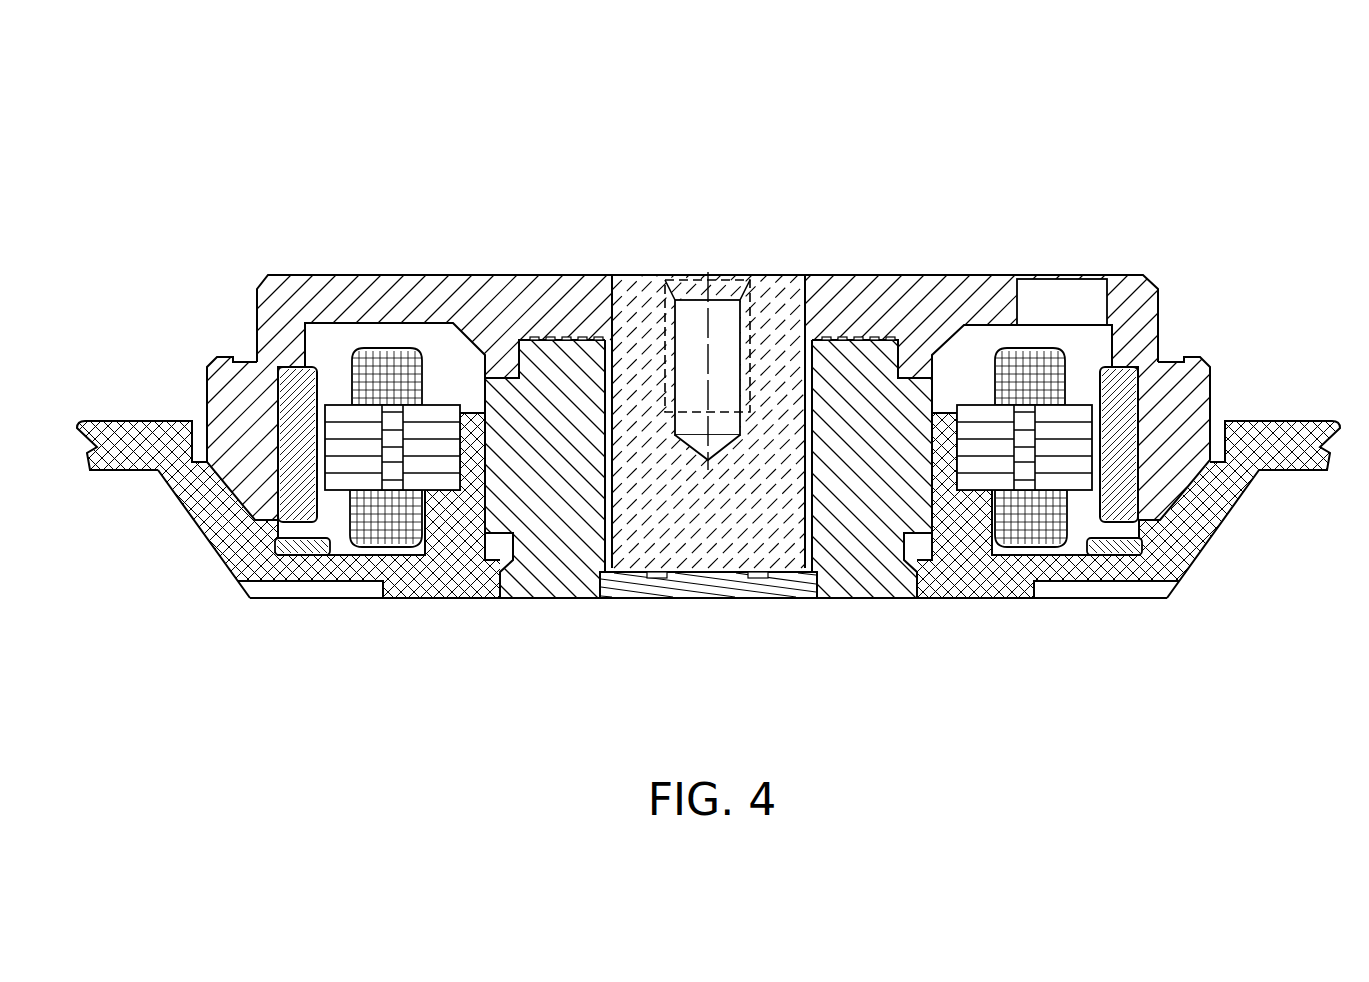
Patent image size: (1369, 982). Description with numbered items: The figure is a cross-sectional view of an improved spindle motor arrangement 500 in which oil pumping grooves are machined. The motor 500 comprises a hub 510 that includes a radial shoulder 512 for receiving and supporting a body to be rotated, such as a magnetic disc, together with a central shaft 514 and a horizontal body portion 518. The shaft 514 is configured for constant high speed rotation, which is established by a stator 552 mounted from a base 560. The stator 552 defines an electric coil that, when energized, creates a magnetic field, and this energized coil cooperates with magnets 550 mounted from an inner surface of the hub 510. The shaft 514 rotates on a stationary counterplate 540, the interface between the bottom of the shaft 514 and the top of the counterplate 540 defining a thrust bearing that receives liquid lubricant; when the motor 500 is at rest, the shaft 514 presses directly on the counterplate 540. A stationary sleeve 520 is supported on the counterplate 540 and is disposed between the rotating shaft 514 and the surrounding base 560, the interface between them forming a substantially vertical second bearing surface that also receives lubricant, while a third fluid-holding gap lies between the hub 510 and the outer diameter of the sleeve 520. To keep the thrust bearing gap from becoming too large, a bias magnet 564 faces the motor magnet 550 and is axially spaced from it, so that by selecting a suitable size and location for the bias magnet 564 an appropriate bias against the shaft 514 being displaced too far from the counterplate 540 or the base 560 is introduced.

The spindle motor arrangement 500 is at (1108, 114).
The hub 510 is at (275, 292).
The radial shoulder 512 is at (240, 355).
The central shaft 514 is at (640, 408).
The horizontal body portion 518 is at (830, 300).
The sleeve 520 is at (540, 512).
The counterplate 540 is at (625, 585).
The magnets 550 is at (297, 502).
The stator 552 is at (1032, 530).
The base 560 is at (465, 575).
The bias magnet 564 is at (297, 548).